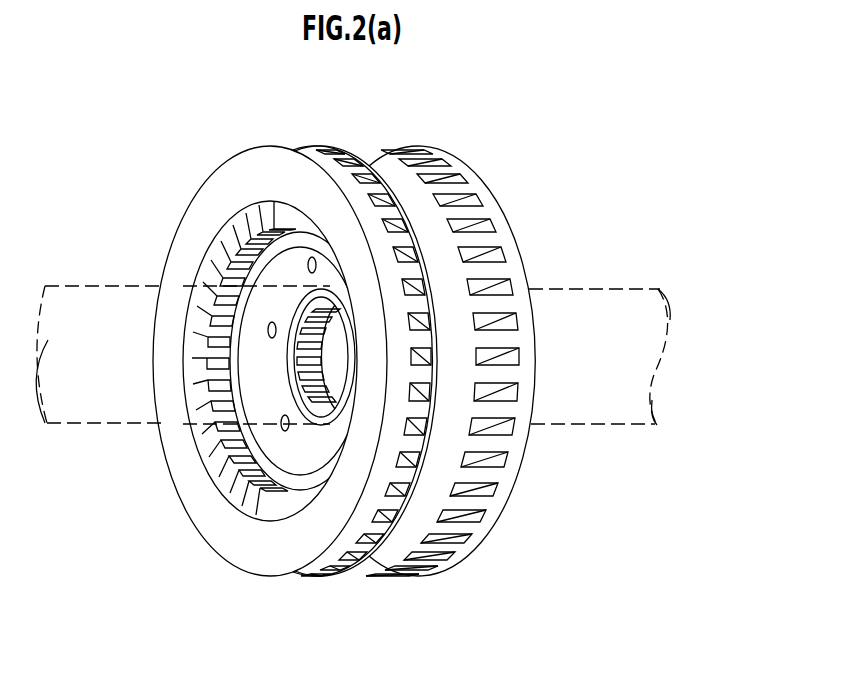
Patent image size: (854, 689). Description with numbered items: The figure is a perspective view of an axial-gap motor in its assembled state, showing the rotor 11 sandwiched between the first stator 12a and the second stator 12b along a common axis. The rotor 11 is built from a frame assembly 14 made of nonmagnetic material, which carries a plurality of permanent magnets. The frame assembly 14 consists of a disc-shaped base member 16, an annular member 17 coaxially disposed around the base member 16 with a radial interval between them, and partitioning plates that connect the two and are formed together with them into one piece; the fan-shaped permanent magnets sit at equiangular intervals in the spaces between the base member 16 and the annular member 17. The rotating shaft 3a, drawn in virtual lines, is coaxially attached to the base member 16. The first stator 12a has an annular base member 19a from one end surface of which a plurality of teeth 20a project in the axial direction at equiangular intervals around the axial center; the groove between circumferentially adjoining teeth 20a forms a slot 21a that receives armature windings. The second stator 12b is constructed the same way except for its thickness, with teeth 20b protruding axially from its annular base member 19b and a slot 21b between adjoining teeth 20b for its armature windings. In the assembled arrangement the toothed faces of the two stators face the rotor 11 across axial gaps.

The rotating shaft 3a is at (77, 425).
The rotor 11 is at (350, 133).
The first stator 12a is at (486, 168).
The second stator 12b is at (243, 145).
The frame assembly 14 is at (349, 585).
The base member 16 is at (295, 457).
The annular member 17 is at (408, 182).
The annular base member 19a is at (510, 468).
The annular base member 19b is at (247, 530).
The teeth 20a is at (515, 378).
The teeth 20b is at (346, 160).
The slot 21a is at (490, 256).
The slot 21b is at (373, 193).